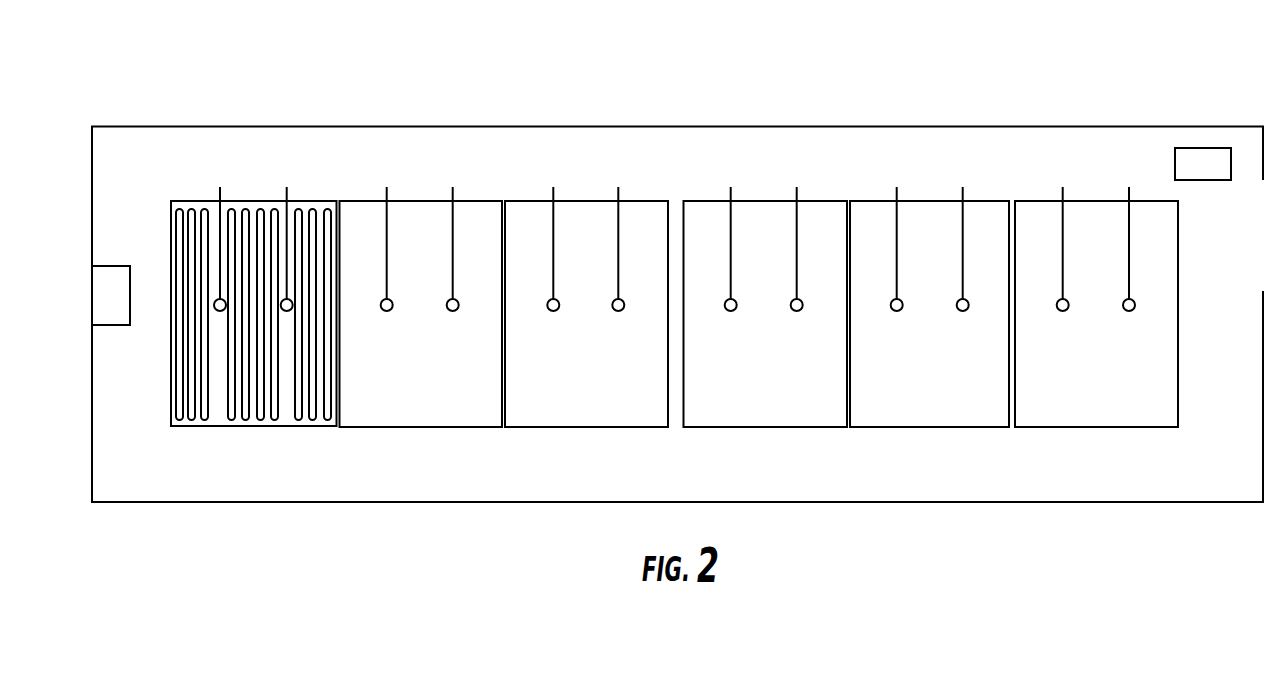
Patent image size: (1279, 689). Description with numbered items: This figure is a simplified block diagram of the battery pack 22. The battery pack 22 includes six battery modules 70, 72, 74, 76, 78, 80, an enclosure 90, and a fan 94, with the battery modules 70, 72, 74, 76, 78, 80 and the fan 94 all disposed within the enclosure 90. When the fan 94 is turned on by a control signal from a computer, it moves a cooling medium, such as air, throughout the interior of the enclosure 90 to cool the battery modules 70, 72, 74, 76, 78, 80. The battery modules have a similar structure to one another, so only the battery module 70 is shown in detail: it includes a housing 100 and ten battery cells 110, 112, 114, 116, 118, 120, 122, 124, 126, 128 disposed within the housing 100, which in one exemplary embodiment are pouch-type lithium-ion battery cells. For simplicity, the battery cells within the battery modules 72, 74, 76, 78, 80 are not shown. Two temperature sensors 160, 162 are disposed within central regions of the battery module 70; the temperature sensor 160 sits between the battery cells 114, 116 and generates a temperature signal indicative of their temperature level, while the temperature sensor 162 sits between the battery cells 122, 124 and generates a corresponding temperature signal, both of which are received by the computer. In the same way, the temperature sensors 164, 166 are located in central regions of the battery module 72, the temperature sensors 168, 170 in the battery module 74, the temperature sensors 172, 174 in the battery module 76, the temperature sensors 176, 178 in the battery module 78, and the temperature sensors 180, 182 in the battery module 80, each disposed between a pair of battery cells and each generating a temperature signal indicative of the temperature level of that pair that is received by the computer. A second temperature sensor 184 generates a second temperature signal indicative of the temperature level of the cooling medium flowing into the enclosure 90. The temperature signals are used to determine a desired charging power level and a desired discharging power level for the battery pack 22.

The battery pack 22 is at (600, 79).
The enclosure 90 is at (787, 126).
The fan 94 is at (114, 266).
The battery module 70 is at (171, 357).
The housing 100 is at (330, 201).
The battery cell 110 is at (178, 421).
The battery cell 112 is at (191, 421).
The battery cell 114 is at (204, 421).
The battery cell 116 is at (231, 421).
The battery cell 118 is at (246, 421).
The battery cell 120 is at (260, 421).
The battery cell 122 is at (275, 421).
The battery cell 124 is at (298, 421).
The battery cell 126 is at (312, 421).
The battery cell 128 is at (327, 405).
The temperature sensor 160 is at (224, 300).
The temperature sensor 162 is at (290, 300).
The battery module 72 is at (483, 427).
The battery module 74 is at (577, 427).
The battery module 76 is at (767, 427).
The battery module 78 is at (922, 427).
The battery module 80 is at (1090, 427).
The temperature sensor 164 is at (387, 311).
The temperature sensor 166 is at (453, 311).
The temperature sensor 168 is at (553, 311).
The temperature sensor 170 is at (618, 311).
The temperature sensor 172 is at (731, 311).
The temperature sensor 174 is at (797, 311).
The temperature sensor 176 is at (897, 311).
The temperature sensor 178 is at (963, 311).
The temperature sensor 180 is at (1063, 311).
The temperature sensor 182 is at (1129, 311).
The second temperature sensor 184 is at (1175, 172).